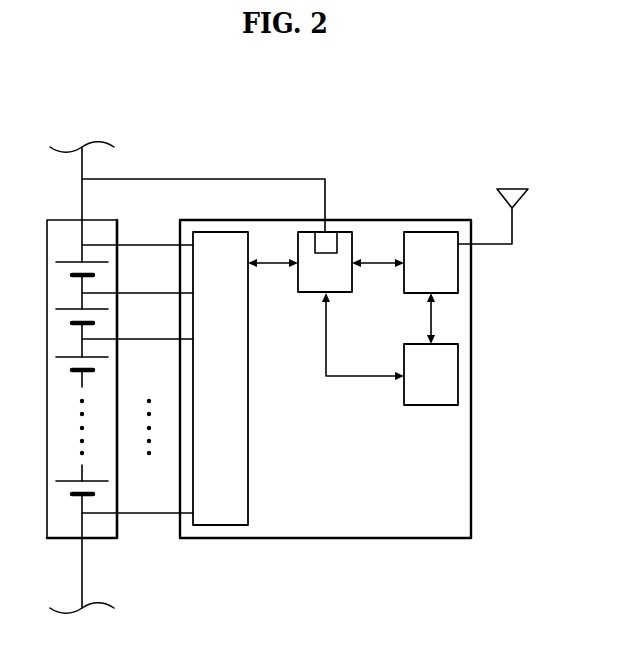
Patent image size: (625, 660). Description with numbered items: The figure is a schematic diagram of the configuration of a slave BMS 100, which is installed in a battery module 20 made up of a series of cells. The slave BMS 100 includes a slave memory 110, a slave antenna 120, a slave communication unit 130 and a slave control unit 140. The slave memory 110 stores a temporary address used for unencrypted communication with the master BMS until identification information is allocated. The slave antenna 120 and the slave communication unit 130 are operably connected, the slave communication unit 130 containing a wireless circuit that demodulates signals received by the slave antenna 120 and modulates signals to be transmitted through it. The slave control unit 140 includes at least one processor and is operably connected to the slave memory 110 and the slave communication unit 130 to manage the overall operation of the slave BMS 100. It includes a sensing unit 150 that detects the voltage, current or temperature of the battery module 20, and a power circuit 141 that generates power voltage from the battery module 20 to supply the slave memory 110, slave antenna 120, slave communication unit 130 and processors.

The battery module 20 is at (58, 218).
The slave BMS 100 is at (452, 147).
The slave memory 110 is at (427, 406).
The slave antenna 120 is at (512, 189).
The slave communication unit 130 is at (434, 231).
The slave control unit 140 is at (342, 231).
The power circuit 141 is at (321, 231).
The sensing unit 150 is at (248, 378).